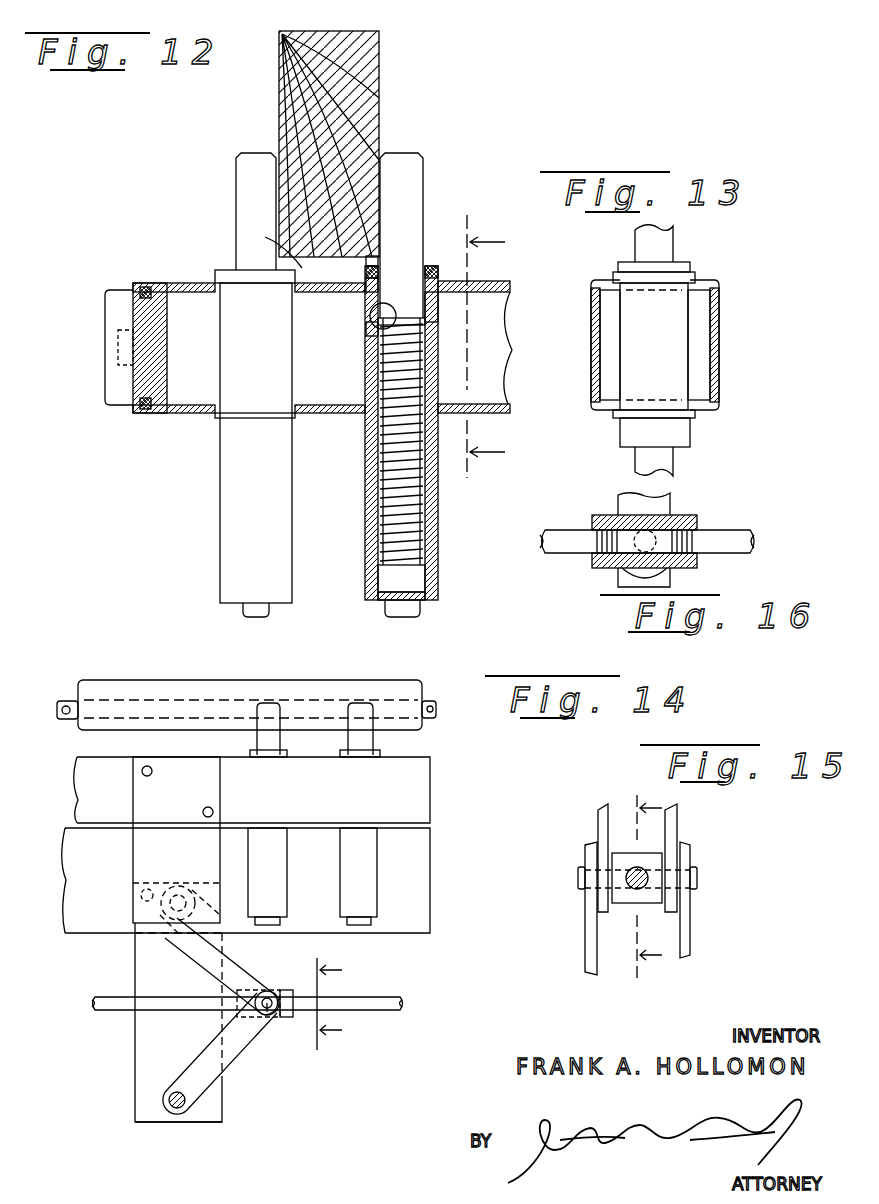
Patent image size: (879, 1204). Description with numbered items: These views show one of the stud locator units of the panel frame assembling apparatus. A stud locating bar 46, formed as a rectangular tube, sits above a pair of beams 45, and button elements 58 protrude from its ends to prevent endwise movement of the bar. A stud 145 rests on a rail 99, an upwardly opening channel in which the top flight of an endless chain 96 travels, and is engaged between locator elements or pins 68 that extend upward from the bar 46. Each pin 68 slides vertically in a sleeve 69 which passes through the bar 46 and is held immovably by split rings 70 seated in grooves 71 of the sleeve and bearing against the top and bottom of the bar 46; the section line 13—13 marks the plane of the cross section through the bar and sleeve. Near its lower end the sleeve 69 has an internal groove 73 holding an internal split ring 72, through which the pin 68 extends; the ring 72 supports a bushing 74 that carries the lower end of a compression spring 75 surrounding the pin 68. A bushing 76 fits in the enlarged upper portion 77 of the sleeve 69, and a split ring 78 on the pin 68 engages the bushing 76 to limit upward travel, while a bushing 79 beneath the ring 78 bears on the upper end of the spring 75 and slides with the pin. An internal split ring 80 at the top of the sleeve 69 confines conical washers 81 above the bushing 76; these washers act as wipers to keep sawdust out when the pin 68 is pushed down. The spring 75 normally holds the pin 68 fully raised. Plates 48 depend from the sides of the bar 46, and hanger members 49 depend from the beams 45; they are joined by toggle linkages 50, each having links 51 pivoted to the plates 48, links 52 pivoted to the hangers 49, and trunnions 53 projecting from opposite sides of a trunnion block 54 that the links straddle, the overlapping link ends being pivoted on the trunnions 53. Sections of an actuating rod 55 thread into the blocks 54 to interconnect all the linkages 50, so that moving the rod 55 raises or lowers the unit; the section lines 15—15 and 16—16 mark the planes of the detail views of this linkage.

In FIG. 12, the stud 145 is at (378, 129).
In FIG. 12, the internal split ring 80 is at (380, 262).
In FIG. 12, the conical washers 81 is at (370, 282).
In FIG. 12, the split rings 70 is at (240, 286).
In FIG. 13, the split rings 70 is at (640, 410).
In FIG. 12, the section line 13— 13 is at (501, 346).
In FIG. 12, the stud locator element 68 is at (378, 240).
In FIG. 13, the stud locator element 68 is at (634, 466).
In FIG. 14, the stud locator element 68 is at (346, 738).
In FIG. 12, the split ring 78 is at (396, 318).
In FIG. 12, the bushing 76 is at (372, 292).
In FIG. 12, the bushing 79 is at (372, 313).
In FIG. 12, the enlarged upper portion 77 is at (372, 334).
In FIG. 12, the grooves 71 is at (445, 307).
In FIG. 12, the stud locating bar 46 is at (498, 334).
In FIG. 13, the stud locating bar 46 is at (719, 373).
In FIG. 14, the stud locating bar 46 is at (420, 800).
In FIG. 12, the button elements 58 is at (124, 412).
In FIG. 12, the compression spring 75 is at (372, 485).
In FIG. 12, the sleeve 69 is at (222, 512).
In FIG. 13, the sleeve 69 is at (690, 433).
In FIG. 14, the sleeve 69 is at (366, 880).
In FIG. 12, the bushing 74 is at (428, 582).
In FIG. 12, the internal groove 73 is at (430, 596).
In FIG. 12, the internal split ring 72 is at (408, 618).
In FIG. 16, the links 51 is at (668, 500).
In FIG. 14, the links 51 is at (262, 967).
In FIG. 15, the links 51 is at (600, 830).
In FIG. 16, the trunnions 53 is at (690, 517).
In FIG. 14, the trunnions 53 is at (272, 1018).
In FIG. 15, the trunnions 53 is at (697, 880).
In FIG. 16, the actuating rod 55 is at (738, 540).
In FIG. 14, the actuating rod 55 is at (383, 998).
In FIG. 15, the actuating rod 55 is at (630, 890).
In FIG. 16, the links 52 is at (618, 583).
In FIG. 14, the links 52 is at (245, 1060).
In FIG. 15, the links 52 is at (690, 955).
In FIG. 16, the trunnion block 54 is at (693, 570).
In FIG. 14, the trunnion block 54 is at (285, 1017).
In FIG. 15, the trunnion block 54 is at (650, 853).
In FIG. 14, the rail 99 is at (283, 680).
In FIG. 14, the endless chains 96 is at (66, 722).
In FIG. 14, the beams 45 is at (425, 870).
In FIG. 14, the plates 48 is at (185, 860).
In FIG. 14, the toggle linkages 50 is at (293, 972).
In FIG. 14, the section line 15— 15 is at (344, 1004).
In FIG. 14, the hanger members 49 is at (146, 1123).
In FIG. 15, the section line 16— 16 is at (646, 885).